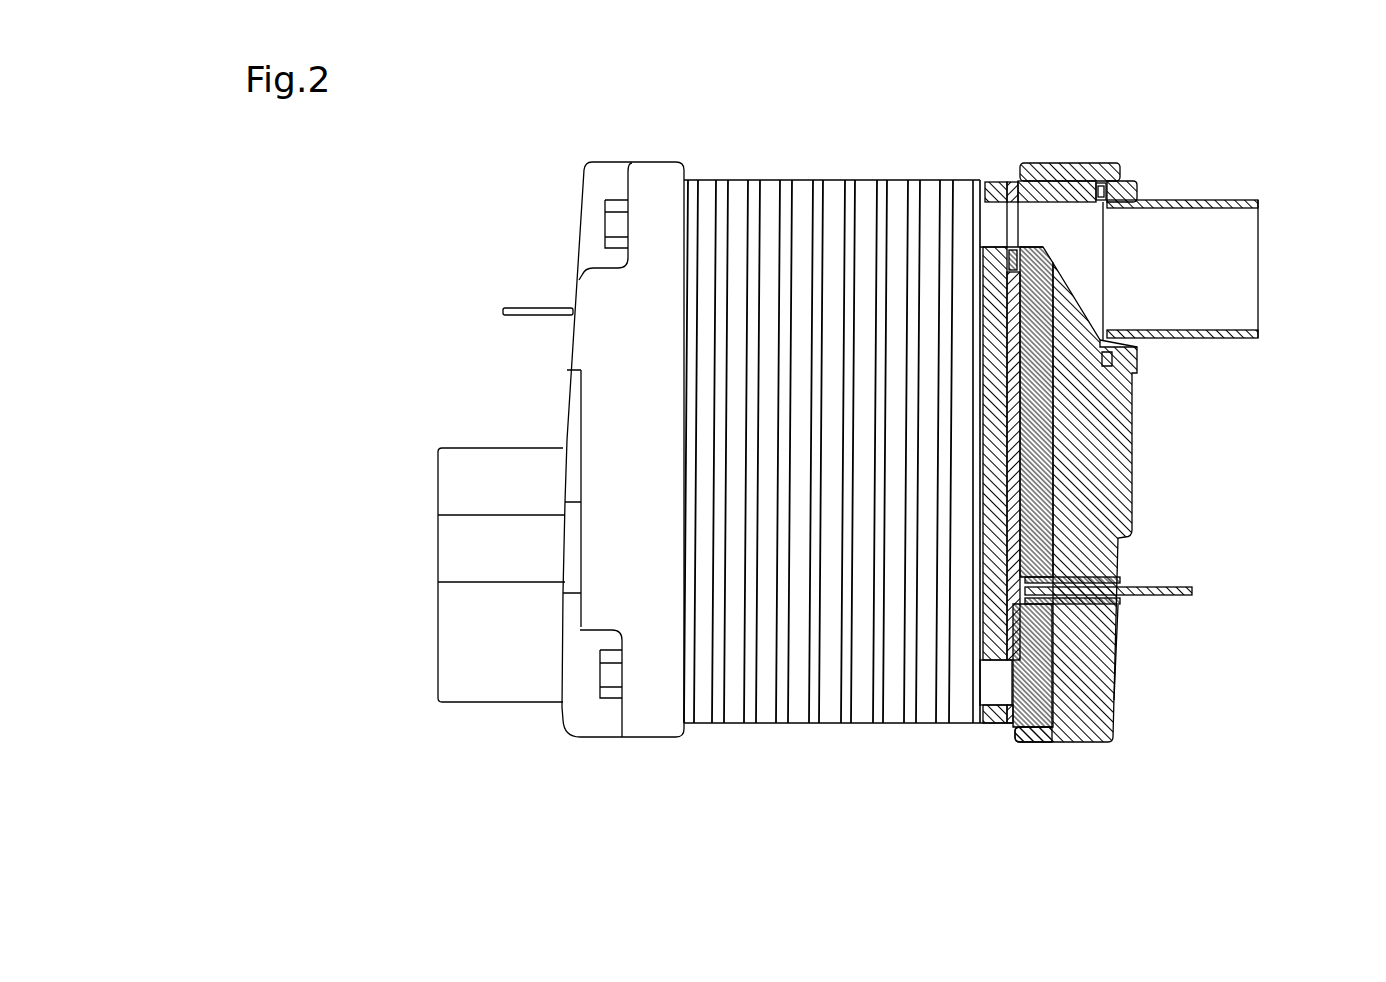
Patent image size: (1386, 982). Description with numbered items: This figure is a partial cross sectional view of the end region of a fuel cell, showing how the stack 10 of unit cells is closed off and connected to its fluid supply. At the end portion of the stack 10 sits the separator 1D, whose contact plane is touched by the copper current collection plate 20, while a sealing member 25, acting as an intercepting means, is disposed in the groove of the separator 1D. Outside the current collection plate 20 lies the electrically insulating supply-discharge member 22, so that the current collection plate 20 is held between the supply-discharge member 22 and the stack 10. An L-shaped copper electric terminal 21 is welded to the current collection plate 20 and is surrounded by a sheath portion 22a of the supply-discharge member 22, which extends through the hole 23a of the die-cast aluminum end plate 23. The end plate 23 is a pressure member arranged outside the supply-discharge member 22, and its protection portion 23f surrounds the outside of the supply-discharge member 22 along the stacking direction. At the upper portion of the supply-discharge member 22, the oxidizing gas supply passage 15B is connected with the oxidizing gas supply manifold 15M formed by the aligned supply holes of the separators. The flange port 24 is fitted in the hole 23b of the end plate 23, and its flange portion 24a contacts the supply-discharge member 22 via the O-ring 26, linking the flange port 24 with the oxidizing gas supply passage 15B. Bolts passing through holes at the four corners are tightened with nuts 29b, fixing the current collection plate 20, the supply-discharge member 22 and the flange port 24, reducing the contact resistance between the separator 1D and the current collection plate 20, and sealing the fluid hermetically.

The stack 10 is at (797, 732).
The separator 1D is at (988, 720).
The oxidizing gas supply manifold 15M is at (997, 220).
The oxidizing gas supply passage 15B is at (1053, 222).
The current collection plate 20 is at (1010, 410).
The electric terminal 21 is at (523, 307).
The supply-discharge member 22 is at (1045, 452).
The sheath portion 22a is at (1127, 603).
The end plate 23 is at (655, 722).
The hole 23a is at (1113, 623).
The hole 23b is at (1137, 340).
The protection portion 23f is at (1087, 168).
The flange port 24 is at (1257, 207).
The flange portion 24a is at (1115, 190).
The sealing member 25 is at (1008, 192).
The O-ring 26 is at (1100, 195).
The nut 29b is at (603, 673).